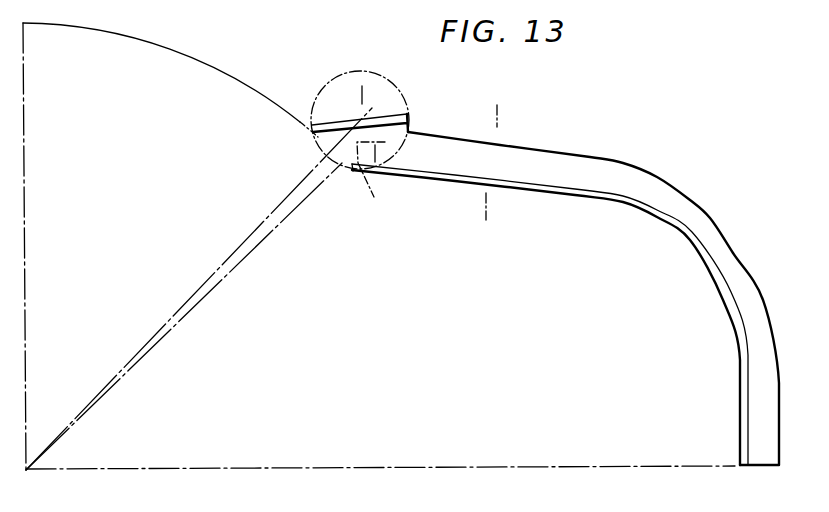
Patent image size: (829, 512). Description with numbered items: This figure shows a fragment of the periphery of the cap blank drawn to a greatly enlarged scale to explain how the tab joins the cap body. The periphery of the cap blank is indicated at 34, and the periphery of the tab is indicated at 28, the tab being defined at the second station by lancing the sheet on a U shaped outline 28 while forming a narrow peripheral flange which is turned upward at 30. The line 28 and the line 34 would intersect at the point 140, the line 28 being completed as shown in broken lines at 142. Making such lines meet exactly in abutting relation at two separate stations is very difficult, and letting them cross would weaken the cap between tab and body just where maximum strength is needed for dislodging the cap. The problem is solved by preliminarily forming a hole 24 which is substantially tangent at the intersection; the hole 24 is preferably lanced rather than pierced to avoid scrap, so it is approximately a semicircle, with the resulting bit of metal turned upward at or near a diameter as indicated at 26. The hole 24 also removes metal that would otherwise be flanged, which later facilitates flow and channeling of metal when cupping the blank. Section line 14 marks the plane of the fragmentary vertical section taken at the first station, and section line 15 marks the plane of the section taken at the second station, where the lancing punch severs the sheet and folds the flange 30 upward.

The section line 14- 14 is at (365, 93).
The section line 15- 15 is at (525, 117).
The hole 24 is at (338, 141).
The upturned bit of metal 26 is at (337, 126).
The periphery of the tab 28 is at (623, 163).
The upwardly lanced flange 30 is at (555, 187).
The periphery of the cap blank 34 is at (237, 77).
The intersection point 140 is at (353, 171).
The broken-line completion of tab periphery 142 is at (384, 175).